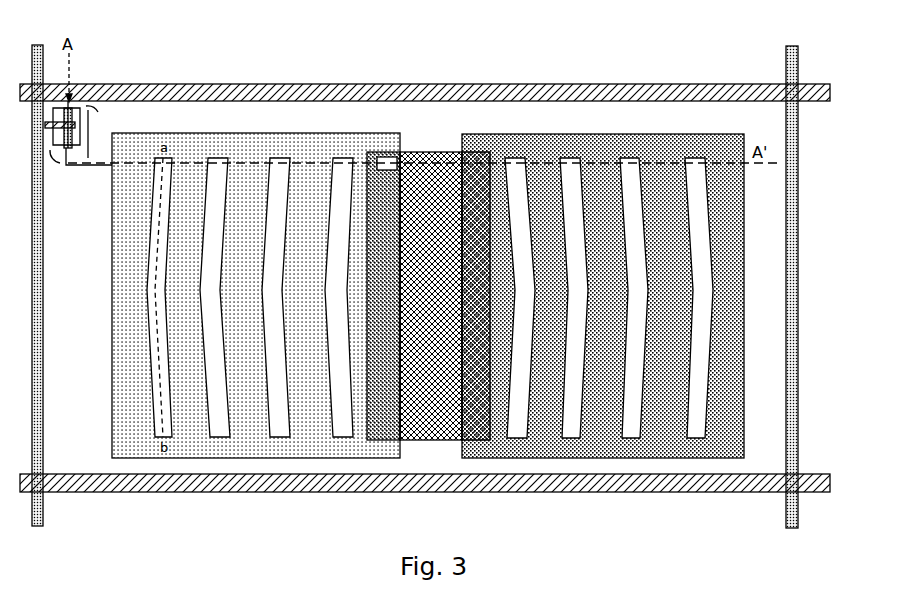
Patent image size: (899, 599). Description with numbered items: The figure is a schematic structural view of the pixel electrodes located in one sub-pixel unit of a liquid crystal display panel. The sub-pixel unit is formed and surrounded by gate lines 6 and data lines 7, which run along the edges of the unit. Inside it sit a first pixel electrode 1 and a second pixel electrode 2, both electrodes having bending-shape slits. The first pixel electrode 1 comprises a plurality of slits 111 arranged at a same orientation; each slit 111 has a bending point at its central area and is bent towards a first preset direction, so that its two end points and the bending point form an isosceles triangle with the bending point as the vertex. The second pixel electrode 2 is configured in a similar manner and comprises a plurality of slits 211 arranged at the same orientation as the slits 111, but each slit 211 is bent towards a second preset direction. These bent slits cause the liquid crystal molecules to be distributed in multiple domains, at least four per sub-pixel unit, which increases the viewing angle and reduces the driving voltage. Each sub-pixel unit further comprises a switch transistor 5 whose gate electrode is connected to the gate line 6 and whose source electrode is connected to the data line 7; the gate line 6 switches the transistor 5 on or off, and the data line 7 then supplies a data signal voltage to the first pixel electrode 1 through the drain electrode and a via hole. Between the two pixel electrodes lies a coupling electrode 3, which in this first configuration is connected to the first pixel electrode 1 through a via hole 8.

The first pixel electrode 1 is at (137, 157).
The slits 111 is at (220, 172).
The second pixel electrode 2 is at (550, 150).
The slits 211 is at (690, 180).
The coupling electrode 3 is at (433, 160).
The switch transistor 5 is at (88, 157).
The gate line 6 is at (82, 118).
The data line 7 is at (795, 358).
The via hole 8 is at (385, 160).